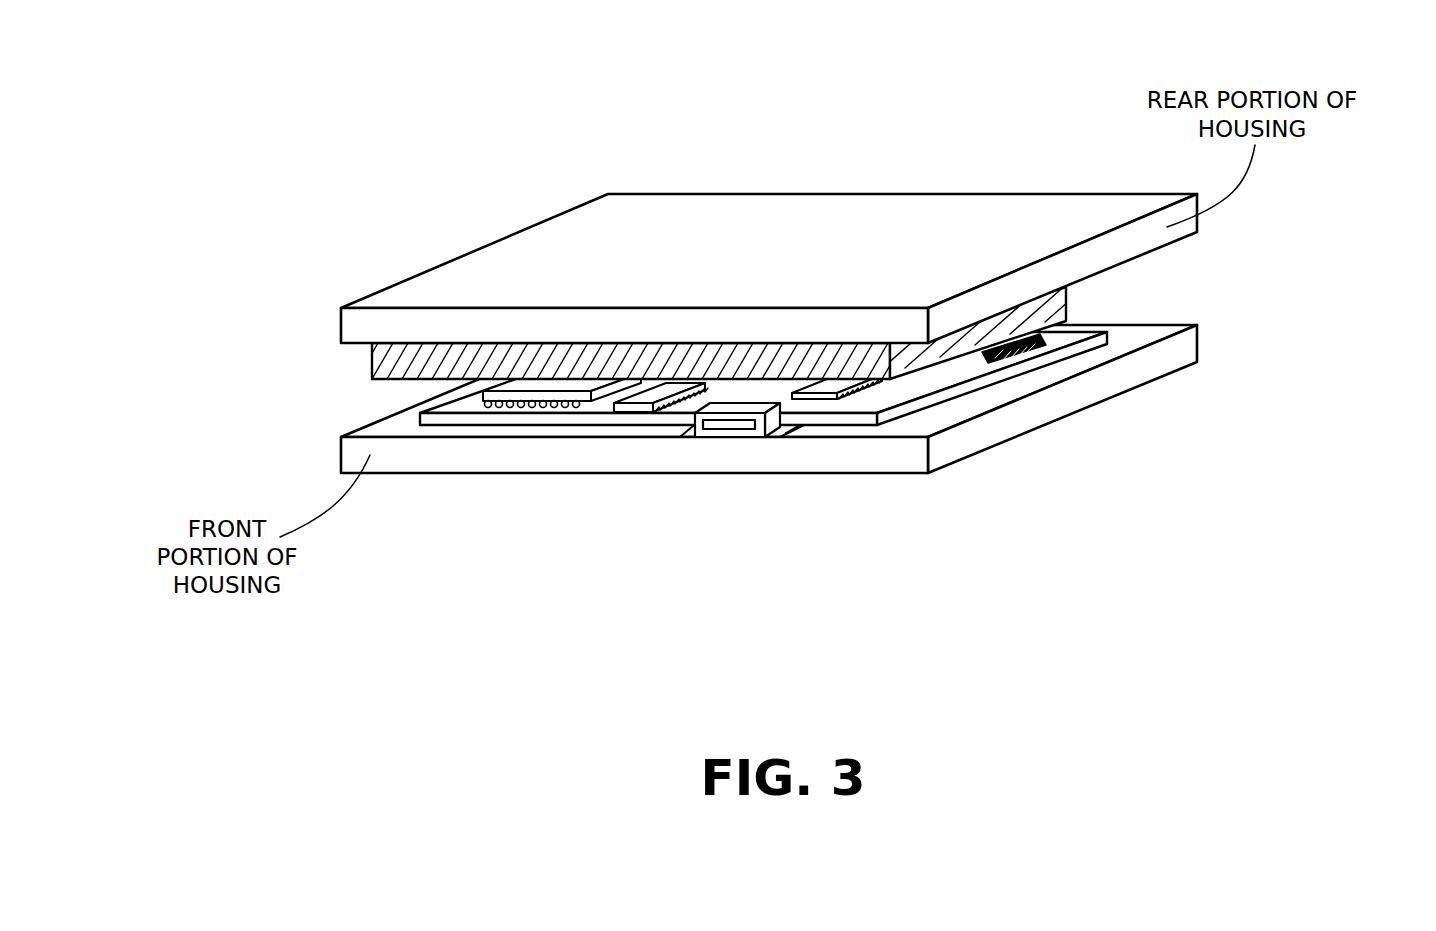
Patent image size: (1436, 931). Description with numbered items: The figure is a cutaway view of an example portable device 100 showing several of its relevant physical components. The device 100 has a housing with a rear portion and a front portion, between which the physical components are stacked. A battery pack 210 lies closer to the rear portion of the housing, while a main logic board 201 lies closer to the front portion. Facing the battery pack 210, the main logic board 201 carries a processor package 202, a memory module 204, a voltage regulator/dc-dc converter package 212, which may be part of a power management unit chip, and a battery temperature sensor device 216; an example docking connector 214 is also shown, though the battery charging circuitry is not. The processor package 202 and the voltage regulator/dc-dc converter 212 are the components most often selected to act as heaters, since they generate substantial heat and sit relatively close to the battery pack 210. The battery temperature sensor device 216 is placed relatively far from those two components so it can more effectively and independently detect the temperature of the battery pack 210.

The portable device 100 is at (240, 654).
The main logic board 201 is at (1035, 362).
The processor package 202 is at (483, 391).
The memory module 204 is at (615, 402).
The battery pack 210 is at (521, 353).
The voltage regulator/dc-dc converter package 212 is at (823, 385).
The docking connector 214 is at (747, 430).
The battery temperature sensor device 216 is at (1045, 326).